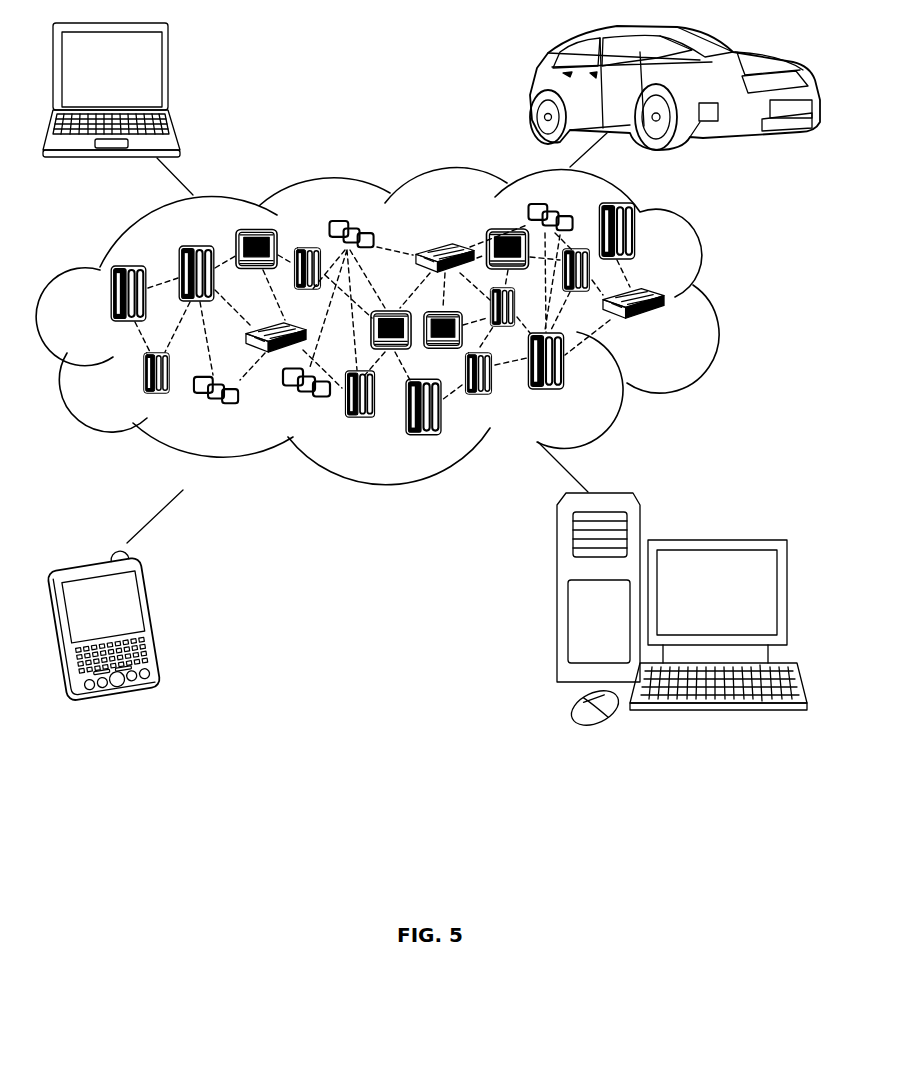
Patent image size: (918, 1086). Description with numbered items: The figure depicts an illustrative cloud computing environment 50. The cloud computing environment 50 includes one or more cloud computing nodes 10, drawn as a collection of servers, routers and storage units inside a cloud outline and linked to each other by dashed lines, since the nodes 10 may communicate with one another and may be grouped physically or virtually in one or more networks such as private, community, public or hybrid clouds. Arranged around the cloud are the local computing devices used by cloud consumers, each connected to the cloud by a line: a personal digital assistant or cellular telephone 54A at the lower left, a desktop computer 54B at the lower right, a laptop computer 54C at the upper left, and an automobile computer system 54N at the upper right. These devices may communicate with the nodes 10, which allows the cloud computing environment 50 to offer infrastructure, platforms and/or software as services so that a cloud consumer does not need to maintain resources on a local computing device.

The cloud computing node 10 is at (670, 328).
The cloud computing environment 50 is at (718, 302).
The personal digital assistant or cellular telephone 54A is at (158, 617).
The desktop computer 54B is at (713, 538).
The laptop computer 54C is at (168, 76).
The automobile computer system 54N is at (533, 92).